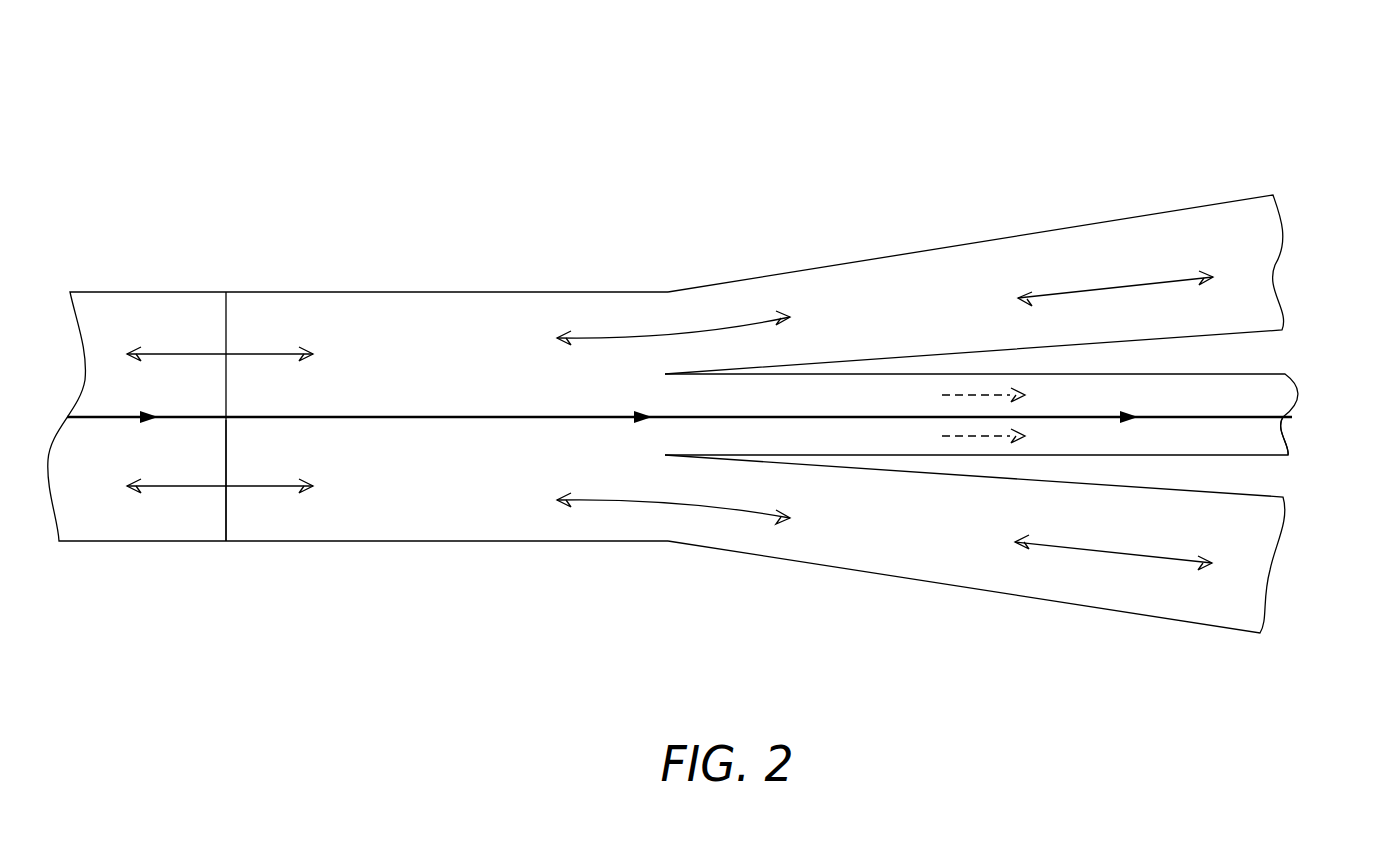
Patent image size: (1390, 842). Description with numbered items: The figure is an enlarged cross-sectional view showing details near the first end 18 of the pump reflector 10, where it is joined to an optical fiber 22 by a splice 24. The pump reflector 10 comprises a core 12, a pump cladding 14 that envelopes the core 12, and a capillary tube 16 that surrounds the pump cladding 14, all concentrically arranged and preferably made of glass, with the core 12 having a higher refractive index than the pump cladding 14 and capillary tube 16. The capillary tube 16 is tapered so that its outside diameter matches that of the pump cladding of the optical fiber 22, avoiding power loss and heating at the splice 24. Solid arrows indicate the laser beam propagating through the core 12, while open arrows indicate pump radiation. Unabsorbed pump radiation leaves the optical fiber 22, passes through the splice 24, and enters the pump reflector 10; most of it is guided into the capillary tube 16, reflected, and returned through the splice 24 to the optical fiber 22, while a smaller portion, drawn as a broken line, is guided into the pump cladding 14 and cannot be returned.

The pump reflector 10 is at (395, 138).
The core 12 is at (1272, 412).
The pump cladding 14 is at (1277, 445).
The capillary tube 16 is at (898, 268).
The first end 18 is at (222, 320).
The optical fiber 22 is at (140, 277).
The splice 24 is at (226, 541).